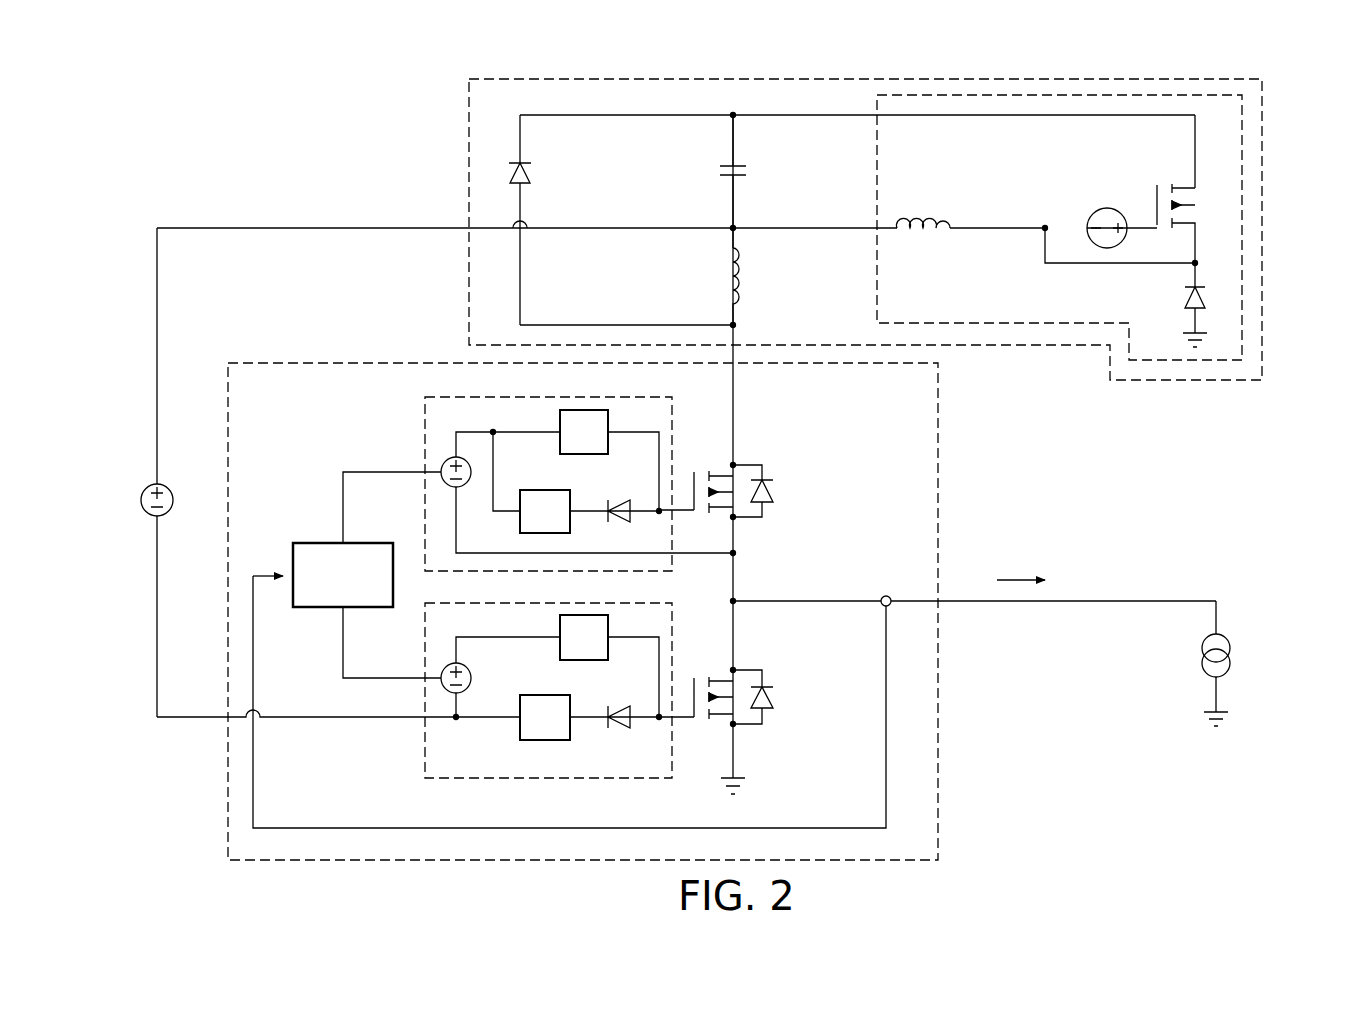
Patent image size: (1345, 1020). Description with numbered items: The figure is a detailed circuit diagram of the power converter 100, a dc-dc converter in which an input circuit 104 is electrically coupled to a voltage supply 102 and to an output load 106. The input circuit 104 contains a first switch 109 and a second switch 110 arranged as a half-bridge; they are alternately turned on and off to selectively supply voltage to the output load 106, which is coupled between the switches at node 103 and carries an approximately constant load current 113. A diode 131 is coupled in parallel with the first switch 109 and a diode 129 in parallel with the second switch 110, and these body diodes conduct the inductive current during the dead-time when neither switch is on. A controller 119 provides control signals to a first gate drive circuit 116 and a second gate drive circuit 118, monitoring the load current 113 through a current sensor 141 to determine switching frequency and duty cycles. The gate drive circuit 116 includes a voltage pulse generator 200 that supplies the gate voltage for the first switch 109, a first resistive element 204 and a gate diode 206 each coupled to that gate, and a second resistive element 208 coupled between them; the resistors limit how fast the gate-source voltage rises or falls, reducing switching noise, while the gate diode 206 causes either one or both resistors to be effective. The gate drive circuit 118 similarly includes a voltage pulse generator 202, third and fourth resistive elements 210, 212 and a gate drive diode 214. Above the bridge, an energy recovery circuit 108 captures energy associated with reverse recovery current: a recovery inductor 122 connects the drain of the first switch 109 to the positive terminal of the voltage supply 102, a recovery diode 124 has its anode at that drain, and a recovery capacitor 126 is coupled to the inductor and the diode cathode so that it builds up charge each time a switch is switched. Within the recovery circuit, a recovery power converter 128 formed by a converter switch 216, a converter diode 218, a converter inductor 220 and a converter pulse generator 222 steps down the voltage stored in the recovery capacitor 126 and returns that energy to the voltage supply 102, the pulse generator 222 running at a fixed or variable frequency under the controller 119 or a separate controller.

The power converter 100 is at (312, 139).
The voltage supply 102 is at (150, 485).
The node 103 is at (738, 604).
The input circuit 104 is at (228, 766).
The output load 106 is at (1229, 645).
The energy recovery circuit 108 is at (1262, 196).
The first switch 109 is at (701, 460).
The second switch 110 is at (702, 666).
The load current 113 is at (1020, 580).
The gate drive circuit 116 is at (425, 402).
The gate drive circuit 118 is at (425, 760).
The controller 119 is at (311, 543).
The recovery inductor 122 is at (756, 290).
The recovery diode 124 is at (500, 170).
The recovery capacitor 126 is at (742, 160).
The recovery power converter 128 is at (1242, 277).
The diode 129 is at (783, 714).
The diode 131 is at (780, 486).
The current sensor 141 is at (886, 596).
The voltage pulse generator 200 is at (443, 463).
The voltage pulse generator 202 is at (443, 668).
The first resistive element 204 is at (560, 424).
The gate diode 206 is at (620, 527).
The second resistive element 208 is at (548, 490).
The third resistive element 210 is at (560, 650).
The fourth resistive element 212 is at (520, 733).
The gate drive diode 214 is at (620, 733).
The converter switch 216 is at (1145, 185).
The converter diode 218 is at (1180, 300).
The converter inductor 220 is at (952, 233).
The converter pulse generator 222 is at (1088, 215).